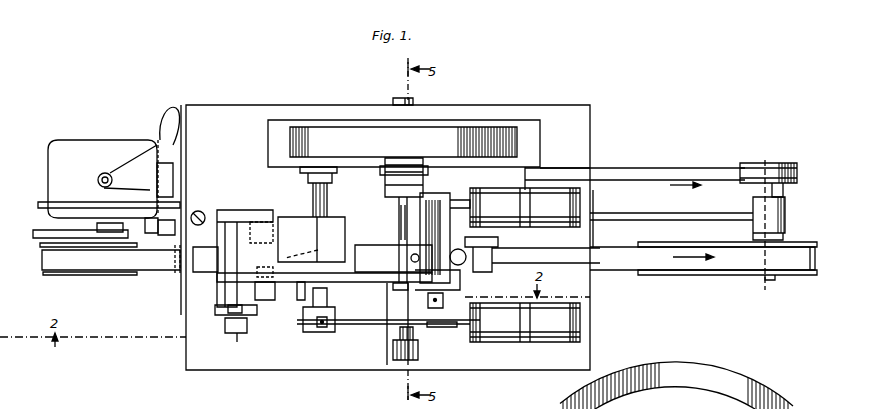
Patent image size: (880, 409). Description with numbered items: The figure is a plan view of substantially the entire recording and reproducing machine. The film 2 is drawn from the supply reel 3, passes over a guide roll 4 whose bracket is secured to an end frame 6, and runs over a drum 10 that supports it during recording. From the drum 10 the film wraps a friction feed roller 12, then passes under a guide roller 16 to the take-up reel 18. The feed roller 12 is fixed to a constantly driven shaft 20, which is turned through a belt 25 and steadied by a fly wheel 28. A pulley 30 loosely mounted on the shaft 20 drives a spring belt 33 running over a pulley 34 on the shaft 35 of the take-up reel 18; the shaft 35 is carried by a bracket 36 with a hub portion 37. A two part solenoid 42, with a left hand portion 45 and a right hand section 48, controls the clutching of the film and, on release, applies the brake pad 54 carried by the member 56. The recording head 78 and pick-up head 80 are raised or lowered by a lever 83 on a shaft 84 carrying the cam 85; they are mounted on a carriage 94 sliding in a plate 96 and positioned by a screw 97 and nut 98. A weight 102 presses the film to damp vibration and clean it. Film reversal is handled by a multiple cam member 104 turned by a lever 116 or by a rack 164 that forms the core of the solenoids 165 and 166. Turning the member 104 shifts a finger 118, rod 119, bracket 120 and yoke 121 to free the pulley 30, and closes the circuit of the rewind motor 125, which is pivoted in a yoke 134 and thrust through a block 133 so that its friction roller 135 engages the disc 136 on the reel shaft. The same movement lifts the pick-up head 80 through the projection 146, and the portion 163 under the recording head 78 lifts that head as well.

The film 2 is at (118, 258).
The supply reel 3 is at (88, 272).
The guide roll 4 is at (172, 238).
The end frame 6 is at (187, 370).
The drum 10 is at (307, 272).
The friction feed roller 12 is at (433, 238).
The guide roller 16 is at (495, 268).
The take-up reel 18 is at (740, 275).
The shaft 20 is at (397, 220).
The belt 25 is at (425, 190).
The fly wheel 28 is at (465, 132).
The pulley 30 is at (419, 168).
The belt 33 is at (638, 170).
The pulley 34 is at (762, 163).
The shaft 35 is at (752, 195).
The bracket 36 is at (633, 213).
The hub portion 37 is at (783, 214).
The two part solenoid 42 is at (530, 228).
The left hand portion of solenoid 45 is at (488, 223).
The right hand section of solenoid 48 is at (553, 227).
The brake pad 54 is at (494, 258).
The odd shaped member 56 is at (445, 300).
The recording head 78 is at (311, 214).
The pick-up head 80 is at (393, 258).
The lever 83 is at (235, 315).
The shaft 84 is at (221, 296).
The cam 85 is at (258, 222).
The carriage 94 is at (222, 210).
The plate 96 is at (233, 262).
The screw 97 is at (238, 342).
The nut 98 is at (250, 333).
The weight 102 is at (205, 262).
The multiple cam member 104 is at (430, 312).
The lever 116 is at (375, 349).
The finger 118 is at (389, 314).
The rod 119 is at (362, 214).
The supporting bracket 120 is at (386, 168).
The yoke 121 is at (386, 168).
The rewind motor 125 is at (68, 150).
The block 133 is at (152, 235).
The yoke 134 is at (110, 175).
The friction roller 135 is at (97, 223).
The disc 136 is at (63, 240).
The projection 146 is at (372, 288).
The portion 163 is at (315, 246).
The rack 164 is at (423, 305).
The solenoid 165 is at (562, 342).
The solenoid 166 is at (500, 342).